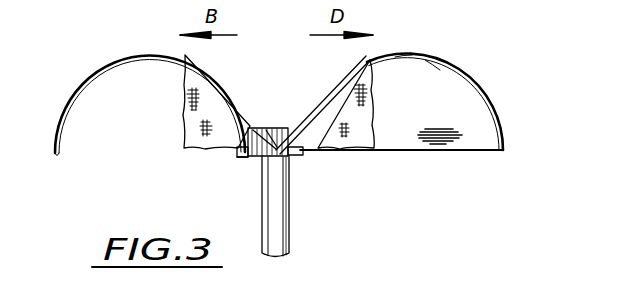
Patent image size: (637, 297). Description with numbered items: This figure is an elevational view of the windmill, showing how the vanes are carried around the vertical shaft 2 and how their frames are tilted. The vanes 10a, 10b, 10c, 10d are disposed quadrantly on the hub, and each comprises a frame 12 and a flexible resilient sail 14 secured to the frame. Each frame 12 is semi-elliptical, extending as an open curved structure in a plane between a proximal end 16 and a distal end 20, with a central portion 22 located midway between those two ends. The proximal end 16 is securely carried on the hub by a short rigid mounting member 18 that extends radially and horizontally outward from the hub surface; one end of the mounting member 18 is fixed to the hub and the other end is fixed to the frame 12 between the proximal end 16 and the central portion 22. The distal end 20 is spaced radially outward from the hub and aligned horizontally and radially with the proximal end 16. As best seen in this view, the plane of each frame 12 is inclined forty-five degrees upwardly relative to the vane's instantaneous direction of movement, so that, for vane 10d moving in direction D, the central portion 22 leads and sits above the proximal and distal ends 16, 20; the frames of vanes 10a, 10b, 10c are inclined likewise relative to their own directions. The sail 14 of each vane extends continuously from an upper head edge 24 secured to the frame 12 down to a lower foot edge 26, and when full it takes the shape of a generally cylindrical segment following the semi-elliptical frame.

The vertical shaft 2 is at (290, 223).
The vane 10a is at (466, 96).
The vane 10b is at (261, 68).
The vane 10c is at (118, 64).
The vane 10d is at (317, 117).
The frame 12 is at (310, 114).
The flexible resilient sail 14 is at (468, 142).
The proximal end 16 is at (240, 151).
The mounting member 18 is at (240, 158).
The distal end 20 is at (55, 153).
The central portion 22 is at (402, 57).
The upper head edge 24 is at (430, 78).
The lower foot edge 26 is at (392, 150).